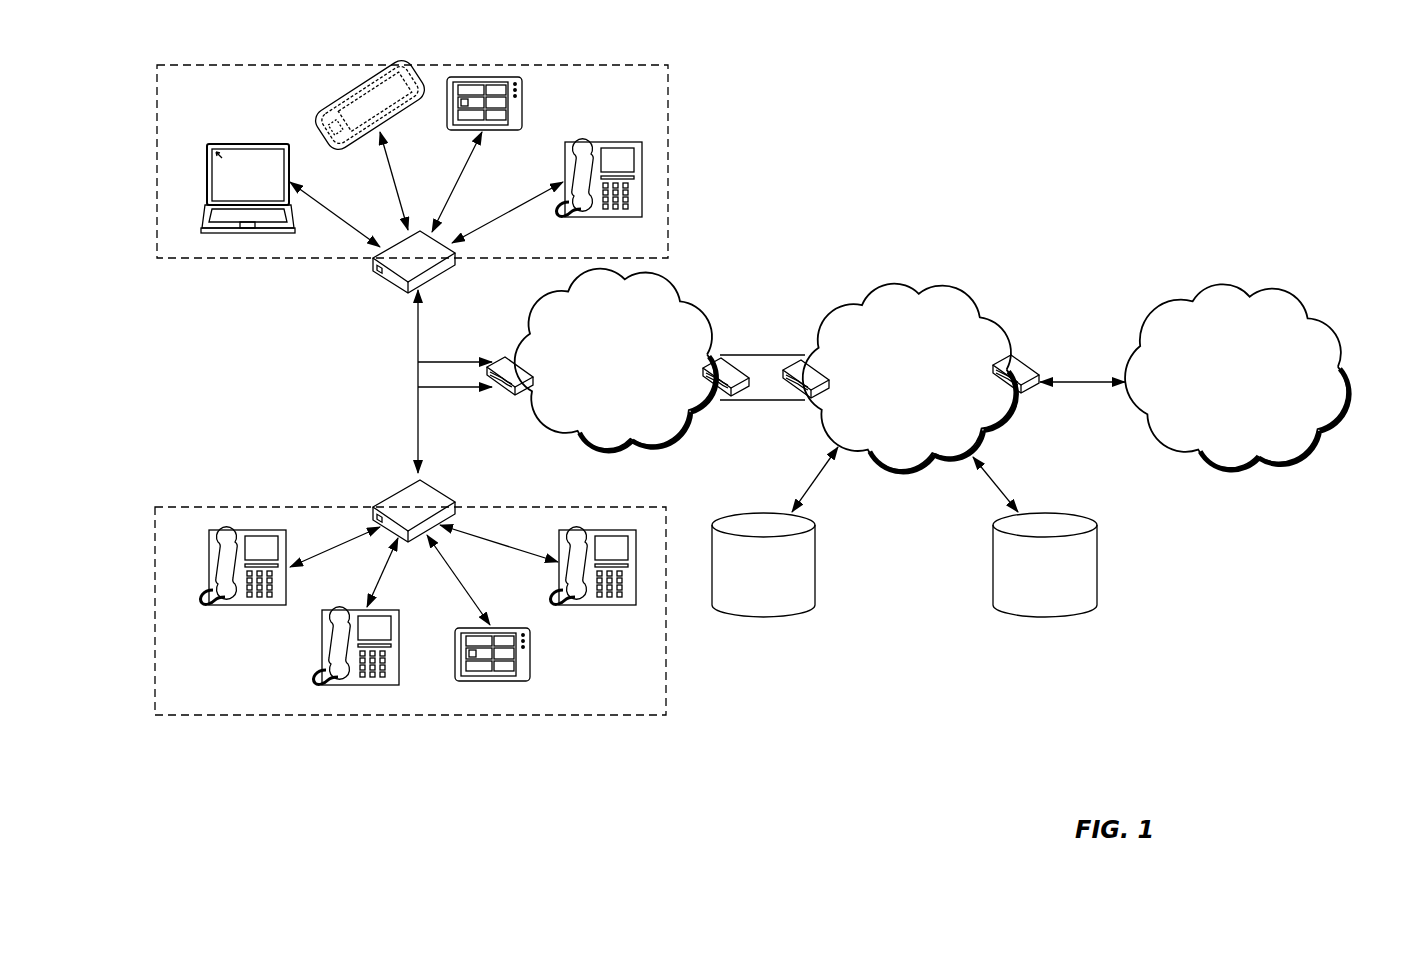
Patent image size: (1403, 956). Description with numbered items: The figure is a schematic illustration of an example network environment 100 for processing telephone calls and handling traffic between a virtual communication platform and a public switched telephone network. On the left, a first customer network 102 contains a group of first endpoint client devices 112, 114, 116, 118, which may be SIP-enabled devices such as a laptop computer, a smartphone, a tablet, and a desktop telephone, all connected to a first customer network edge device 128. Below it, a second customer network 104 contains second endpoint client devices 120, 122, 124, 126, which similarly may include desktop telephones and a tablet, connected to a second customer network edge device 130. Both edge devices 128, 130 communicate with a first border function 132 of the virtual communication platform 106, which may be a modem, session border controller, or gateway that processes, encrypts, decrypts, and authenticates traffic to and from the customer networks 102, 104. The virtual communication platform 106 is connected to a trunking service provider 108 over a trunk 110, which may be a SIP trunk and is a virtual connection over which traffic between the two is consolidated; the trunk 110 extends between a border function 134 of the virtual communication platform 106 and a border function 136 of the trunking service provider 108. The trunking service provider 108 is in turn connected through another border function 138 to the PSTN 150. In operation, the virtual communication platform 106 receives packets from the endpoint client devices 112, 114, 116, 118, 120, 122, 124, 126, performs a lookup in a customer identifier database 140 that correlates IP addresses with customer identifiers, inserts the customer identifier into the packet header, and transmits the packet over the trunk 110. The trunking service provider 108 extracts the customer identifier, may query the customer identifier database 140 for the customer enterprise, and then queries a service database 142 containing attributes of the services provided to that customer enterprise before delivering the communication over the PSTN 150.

The network environment 100 is at (932, 172).
The first customer network 102 is at (248, 63).
The second customer network 104 is at (248, 505).
The virtual communication platform 106 is at (677, 272).
The trunking service provider 108 is at (882, 275).
The trunk 110 is at (755, 352).
The endpoint client device 112 is at (247, 143).
The endpoint client device 114 is at (347, 98).
The endpoint client device 116 is at (525, 112).
The endpoint client device 118 is at (583, 142).
The endpoint client device 120 is at (247, 607).
The endpoint client device 122 is at (322, 640).
The endpoint client device 124 is at (532, 663).
The endpoint client device 126 is at (592, 607).
The first customer network edge device 128 is at (383, 277).
The second customer network edge device 130 is at (393, 490).
The first border function 132 is at (503, 358).
The border function 134 is at (725, 368).
The border function 136 is at (802, 367).
The border function 138 is at (1023, 358).
The customer identifier database 140 is at (817, 572).
The service database 142 is at (1098, 572).
The public switched telephone network 150 is at (1208, 278).